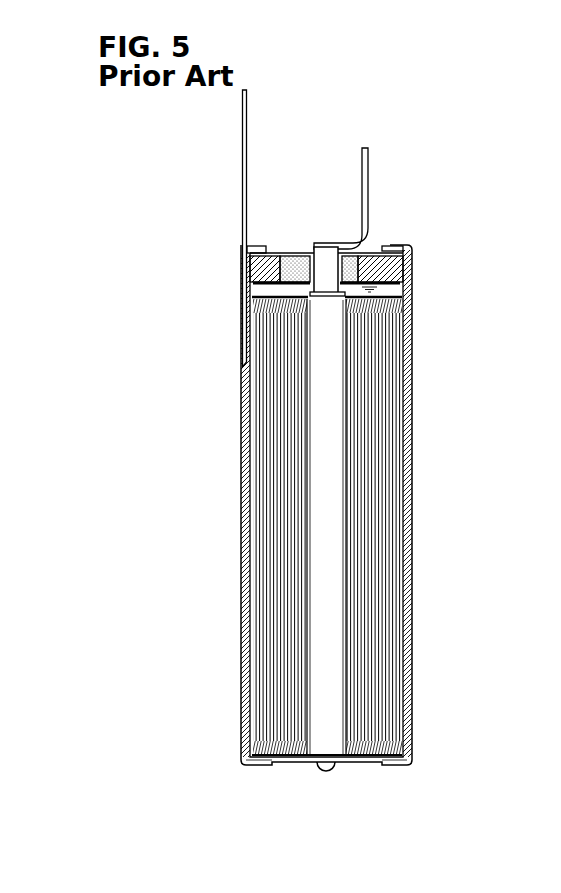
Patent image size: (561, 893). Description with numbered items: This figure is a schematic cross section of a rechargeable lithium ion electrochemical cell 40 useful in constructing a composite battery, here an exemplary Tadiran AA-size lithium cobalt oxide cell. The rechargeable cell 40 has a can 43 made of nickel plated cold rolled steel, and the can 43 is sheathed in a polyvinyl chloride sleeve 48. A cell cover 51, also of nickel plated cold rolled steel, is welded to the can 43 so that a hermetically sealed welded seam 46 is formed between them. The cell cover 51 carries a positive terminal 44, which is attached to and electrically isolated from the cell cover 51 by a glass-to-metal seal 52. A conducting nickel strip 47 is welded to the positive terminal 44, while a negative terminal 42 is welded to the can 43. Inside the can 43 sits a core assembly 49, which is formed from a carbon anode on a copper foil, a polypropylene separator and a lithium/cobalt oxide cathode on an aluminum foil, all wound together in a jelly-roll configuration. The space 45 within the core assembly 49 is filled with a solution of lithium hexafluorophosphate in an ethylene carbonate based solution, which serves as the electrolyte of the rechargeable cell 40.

The rechargeable lithium ion electrochemical cell 40 is at (329, 140).
The negative terminal 42 is at (240, 190).
The can 43 is at (295, 766).
The positive terminal 44 is at (331, 296).
The space 45 is at (325, 533).
The welded seam 46 is at (410, 245).
The conducting nickel strip 47 is at (368, 176).
The polyvinyl chloride sleeve 48 is at (410, 625).
The core assembly 49 is at (377, 460).
The cell cover 51 is at (368, 253).
The glass-to-metal seal 52 is at (305, 253).